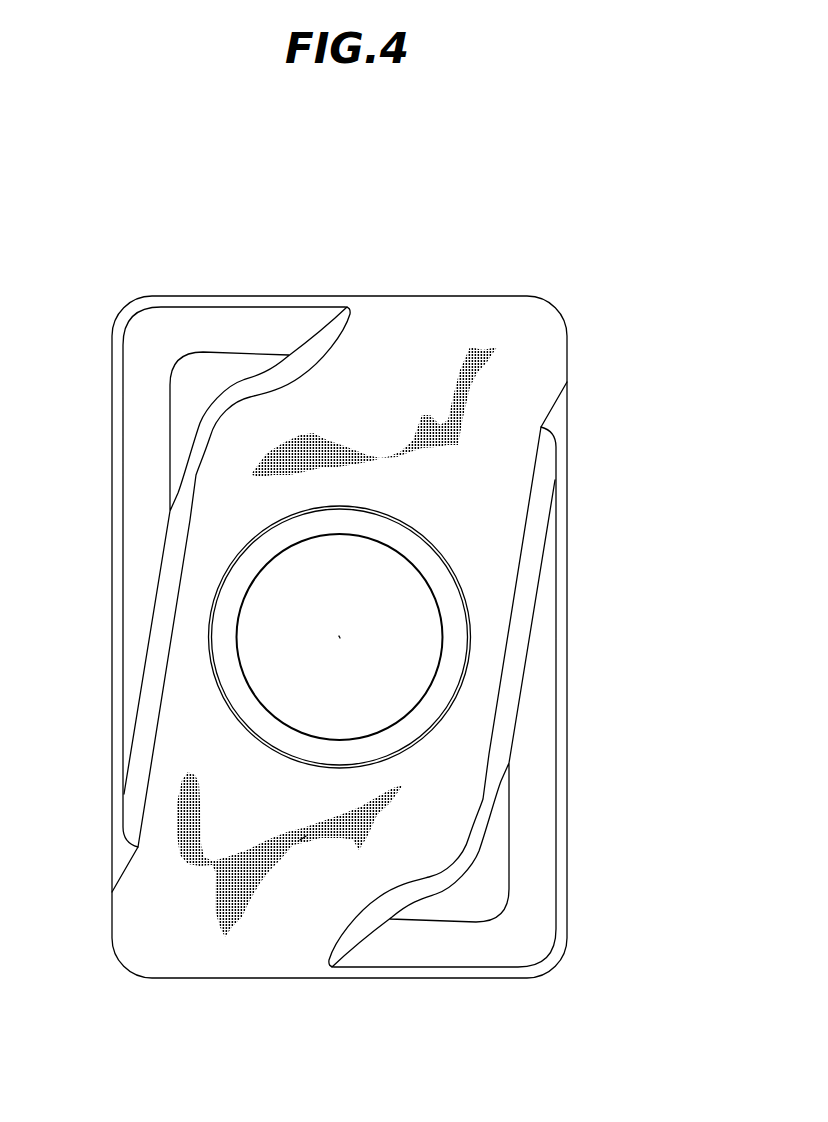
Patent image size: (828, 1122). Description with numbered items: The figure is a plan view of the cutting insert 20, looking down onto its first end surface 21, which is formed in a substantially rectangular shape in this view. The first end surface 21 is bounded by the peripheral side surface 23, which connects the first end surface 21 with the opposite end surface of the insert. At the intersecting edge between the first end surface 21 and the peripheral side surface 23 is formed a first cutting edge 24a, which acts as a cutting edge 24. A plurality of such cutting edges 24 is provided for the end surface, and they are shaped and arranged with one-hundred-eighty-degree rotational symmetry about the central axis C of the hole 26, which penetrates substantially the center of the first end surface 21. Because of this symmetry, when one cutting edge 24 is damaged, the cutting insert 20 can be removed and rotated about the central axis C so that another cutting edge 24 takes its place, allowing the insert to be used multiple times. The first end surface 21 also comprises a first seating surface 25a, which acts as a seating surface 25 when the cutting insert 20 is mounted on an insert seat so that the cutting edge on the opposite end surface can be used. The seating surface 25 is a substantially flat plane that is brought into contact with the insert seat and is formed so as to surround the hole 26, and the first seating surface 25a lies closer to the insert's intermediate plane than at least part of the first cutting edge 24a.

The cutting insert 20 is at (403, 415).
The first end surface 21 is at (353, 422).
The peripheral side surface 23 is at (567, 598).
The cutting edge 24 is at (117, 322).
The first cutting edge 24a is at (567, 813).
The seating surface 25 is at (303, 832).
The first seating surface 25a is at (353, 843).
The hole 26 is at (423, 693).
The central axis C is at (340, 637).